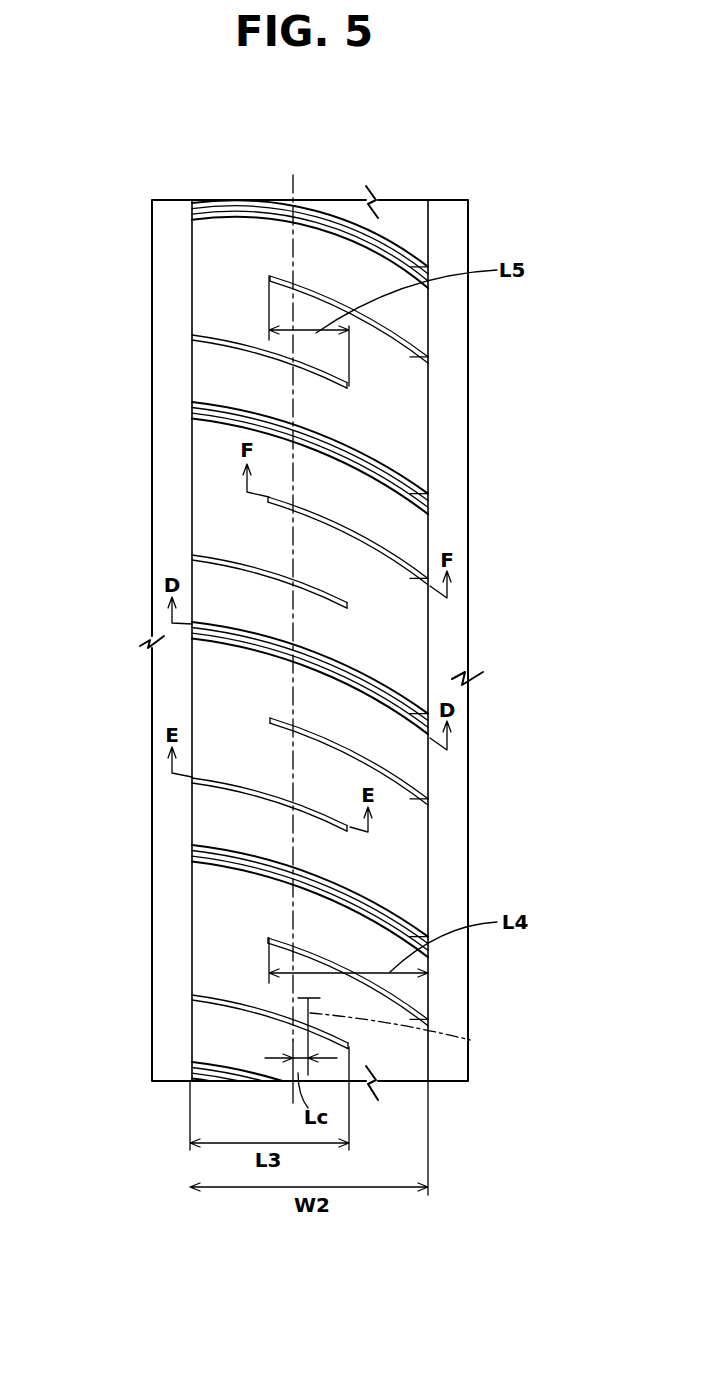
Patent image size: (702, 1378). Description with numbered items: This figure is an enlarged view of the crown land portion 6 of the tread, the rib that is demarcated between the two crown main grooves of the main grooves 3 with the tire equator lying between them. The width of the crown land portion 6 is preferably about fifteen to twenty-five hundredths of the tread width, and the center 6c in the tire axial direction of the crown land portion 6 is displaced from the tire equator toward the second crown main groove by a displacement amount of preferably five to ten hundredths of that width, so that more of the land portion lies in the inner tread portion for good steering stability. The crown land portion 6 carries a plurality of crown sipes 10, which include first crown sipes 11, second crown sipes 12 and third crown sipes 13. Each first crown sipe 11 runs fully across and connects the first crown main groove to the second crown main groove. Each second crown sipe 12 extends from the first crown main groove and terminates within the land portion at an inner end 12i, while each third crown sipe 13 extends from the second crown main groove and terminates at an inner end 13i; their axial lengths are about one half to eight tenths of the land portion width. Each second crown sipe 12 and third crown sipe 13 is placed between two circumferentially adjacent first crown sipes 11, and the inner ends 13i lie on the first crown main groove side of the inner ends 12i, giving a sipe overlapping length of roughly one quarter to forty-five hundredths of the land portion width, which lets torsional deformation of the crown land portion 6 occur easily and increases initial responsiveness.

The main grooves 3 is at (315, 612).
The crown land portion 6 is at (322, 260).
The center in the tire axial direction of the crown land portion 6c is at (470, 1040).
The crown sipes 10 is at (307, 640).
The first crown sipe 11 is at (278, 657).
The second crown sipe 12 is at (310, 692).
The inner end of the second crown sipe 12i is at (350, 385).
The third crown sipe 13 is at (304, 641).
The inner end of the third crown sipe 13i is at (270, 276).